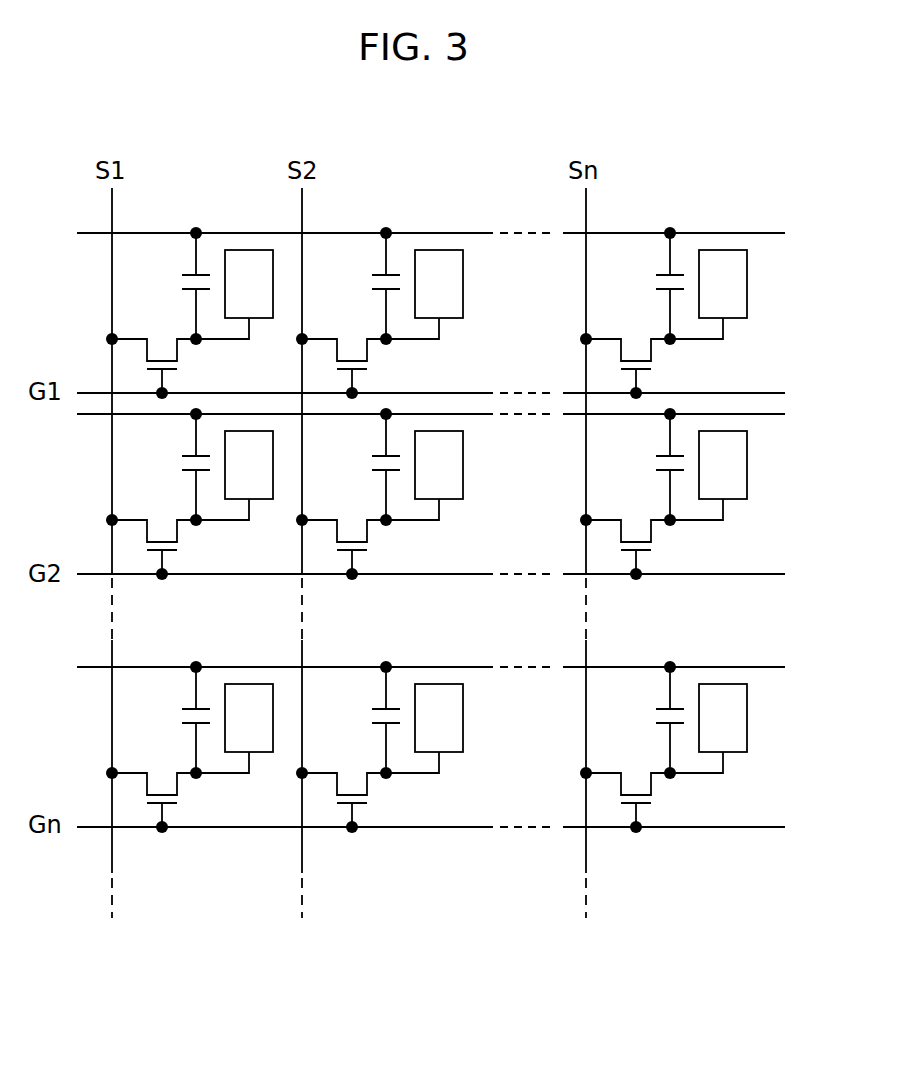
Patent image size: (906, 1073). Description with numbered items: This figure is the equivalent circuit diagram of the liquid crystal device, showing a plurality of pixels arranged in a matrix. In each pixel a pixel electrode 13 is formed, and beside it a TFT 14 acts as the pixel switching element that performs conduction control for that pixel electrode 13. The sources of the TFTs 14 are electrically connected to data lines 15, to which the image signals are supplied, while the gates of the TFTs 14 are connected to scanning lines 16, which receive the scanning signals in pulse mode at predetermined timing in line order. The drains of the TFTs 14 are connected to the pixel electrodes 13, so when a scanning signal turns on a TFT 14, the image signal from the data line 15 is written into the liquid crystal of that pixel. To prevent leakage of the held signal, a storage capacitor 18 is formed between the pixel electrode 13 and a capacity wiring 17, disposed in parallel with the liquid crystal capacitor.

The pixel electrode 13 is at (266, 318).
The TFT 14 is at (189, 363).
The data line 15 is at (112, 205).
The scanning line 16 is at (96, 391).
The capacity wiring 17 is at (90, 232).
The storage capacitor 18 is at (175, 277).